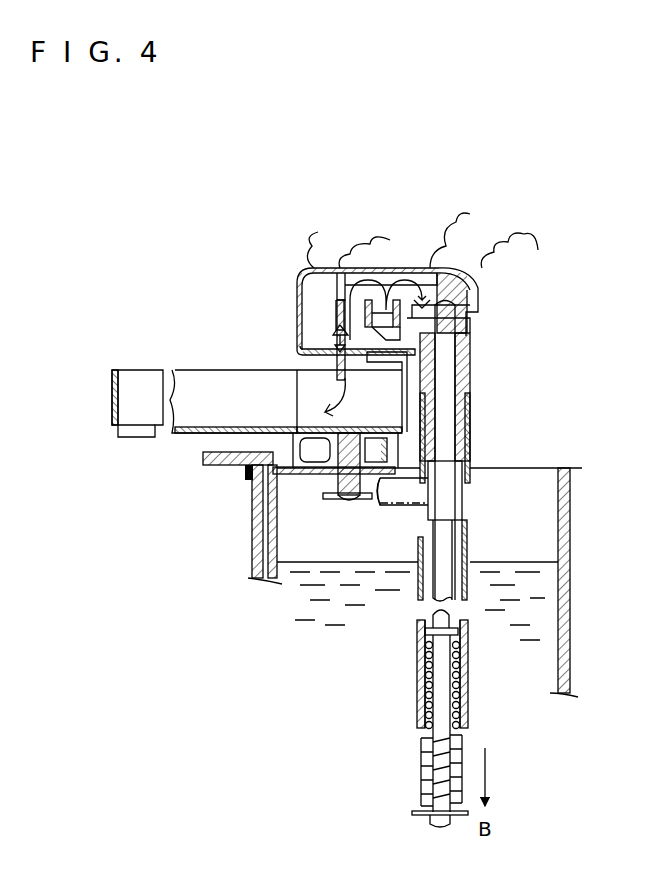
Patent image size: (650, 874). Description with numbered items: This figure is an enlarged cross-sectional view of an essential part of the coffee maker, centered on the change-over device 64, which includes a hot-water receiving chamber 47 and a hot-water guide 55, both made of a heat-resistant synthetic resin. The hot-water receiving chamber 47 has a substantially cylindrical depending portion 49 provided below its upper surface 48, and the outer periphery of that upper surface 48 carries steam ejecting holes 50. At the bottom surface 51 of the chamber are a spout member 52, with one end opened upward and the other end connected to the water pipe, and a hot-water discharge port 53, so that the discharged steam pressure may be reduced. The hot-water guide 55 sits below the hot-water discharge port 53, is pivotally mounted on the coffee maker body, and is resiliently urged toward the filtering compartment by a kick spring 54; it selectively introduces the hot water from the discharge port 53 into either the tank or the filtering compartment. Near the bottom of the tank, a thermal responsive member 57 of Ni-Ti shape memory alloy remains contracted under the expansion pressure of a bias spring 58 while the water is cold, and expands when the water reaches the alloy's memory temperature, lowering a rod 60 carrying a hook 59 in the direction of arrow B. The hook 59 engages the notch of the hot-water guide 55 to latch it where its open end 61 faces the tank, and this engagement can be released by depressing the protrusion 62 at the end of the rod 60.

The hot-water receiving chamber 47 is at (296, 278).
The upper surface 48 is at (381, 268).
The depending portion 49 is at (335, 313).
The steam ejecting holes 50 is at (300, 286).
The bottom surface 51 is at (322, 347).
The spout member 52 is at (412, 302).
The hot-water discharge port 53 is at (318, 402).
The kick spring 54 is at (260, 572).
The hot-water guide 55 is at (197, 368).
The thermal responsive member 57 is at (420, 777).
The bias spring 58 is at (465, 667).
The hook 59 is at (393, 513).
The rod 60 is at (447, 427).
The open end 61 is at (140, 433).
The protrusion 62 is at (447, 323).
The change-over device 64 is at (430, 203).